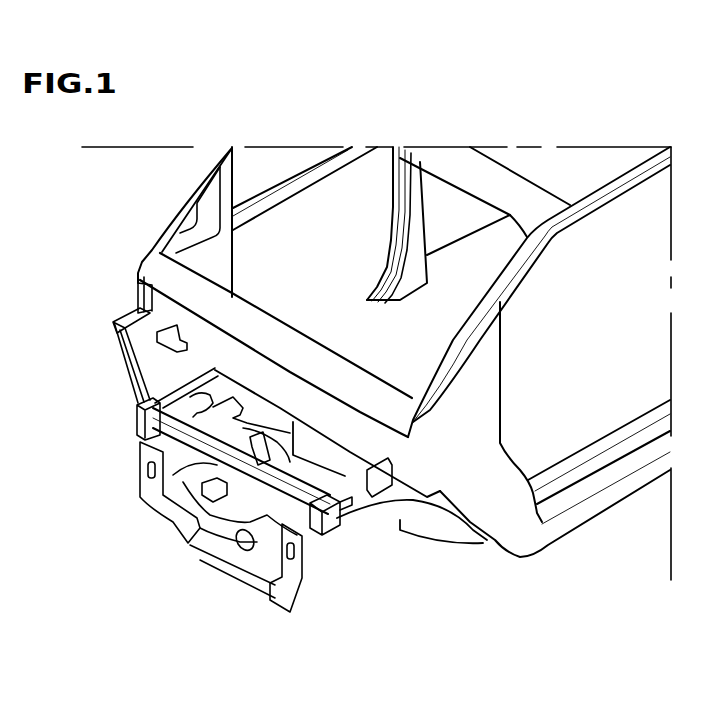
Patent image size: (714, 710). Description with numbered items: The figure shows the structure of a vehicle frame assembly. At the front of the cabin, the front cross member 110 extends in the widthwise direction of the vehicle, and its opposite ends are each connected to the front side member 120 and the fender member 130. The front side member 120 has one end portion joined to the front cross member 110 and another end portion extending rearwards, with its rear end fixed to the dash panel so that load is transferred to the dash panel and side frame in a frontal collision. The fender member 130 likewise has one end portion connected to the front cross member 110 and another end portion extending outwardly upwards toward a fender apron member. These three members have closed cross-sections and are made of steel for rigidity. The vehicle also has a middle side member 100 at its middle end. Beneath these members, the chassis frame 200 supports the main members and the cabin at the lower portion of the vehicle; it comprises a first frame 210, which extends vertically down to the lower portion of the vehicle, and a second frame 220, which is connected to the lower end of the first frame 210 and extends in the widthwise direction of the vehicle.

The middle side member 100 is at (582, 513).
The front cross member 110 is at (146, 425).
The front side member 120 is at (352, 505).
The fender member 130 is at (375, 475).
The chassis frame 200 is at (255, 568).
The first frame 210 is at (225, 535).
The second frame 220 is at (283, 583).